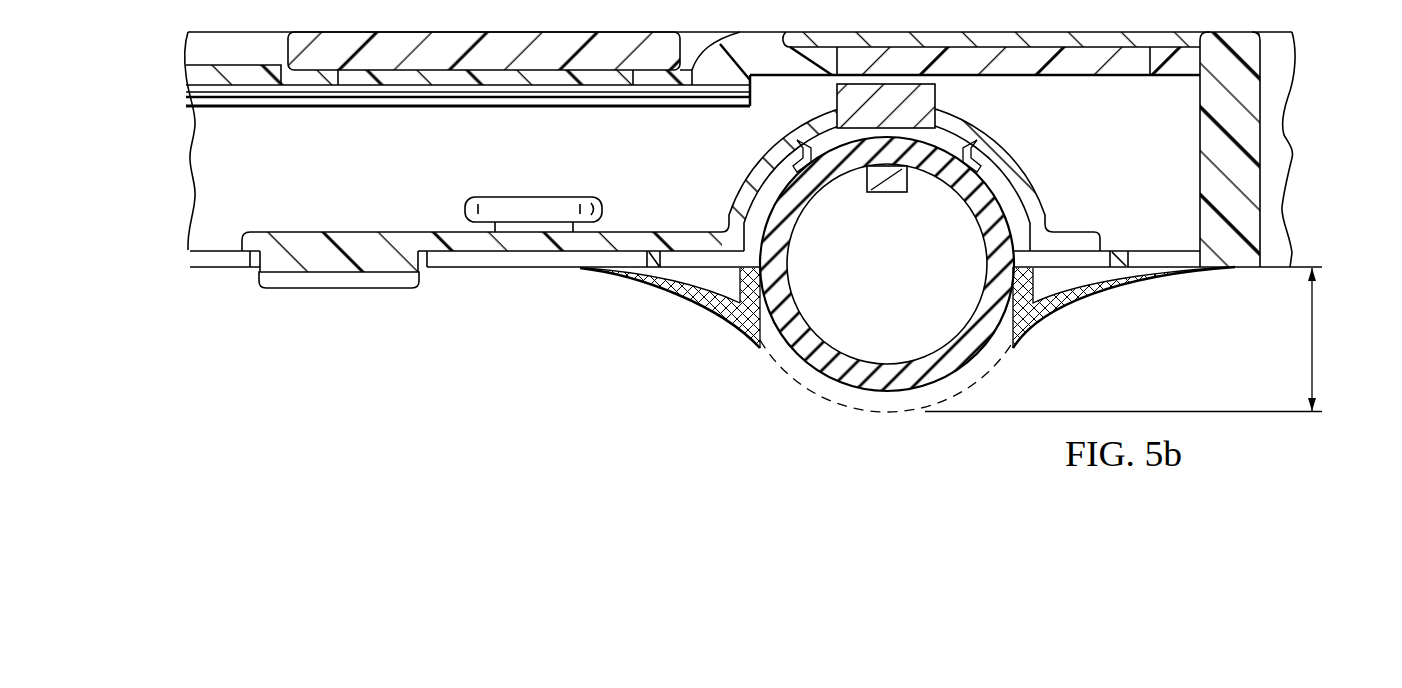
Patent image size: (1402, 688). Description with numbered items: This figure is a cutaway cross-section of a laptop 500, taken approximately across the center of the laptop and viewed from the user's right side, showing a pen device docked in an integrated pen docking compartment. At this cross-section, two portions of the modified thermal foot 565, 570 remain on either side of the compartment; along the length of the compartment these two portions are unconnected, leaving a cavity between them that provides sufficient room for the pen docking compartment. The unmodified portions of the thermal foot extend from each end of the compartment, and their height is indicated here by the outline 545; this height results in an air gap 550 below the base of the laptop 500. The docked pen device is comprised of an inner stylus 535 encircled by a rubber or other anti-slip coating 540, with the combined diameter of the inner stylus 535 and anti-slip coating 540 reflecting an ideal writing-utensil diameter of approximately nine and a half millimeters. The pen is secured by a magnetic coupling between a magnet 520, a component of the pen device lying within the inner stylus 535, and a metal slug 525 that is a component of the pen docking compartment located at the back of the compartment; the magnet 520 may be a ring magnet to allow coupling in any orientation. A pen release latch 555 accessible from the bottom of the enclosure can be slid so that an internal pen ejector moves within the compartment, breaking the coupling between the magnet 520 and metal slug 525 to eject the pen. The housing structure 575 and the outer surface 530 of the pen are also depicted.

The laptop 500 is at (483, 406).
The magnet 520 is at (888, 194).
The metal slug 525 is at (932, 96).
The outer surface of tube 530 is at (988, 362).
The inner stylus 535 is at (906, 305).
The anti-slip coating 540 is at (810, 358).
The outline of unmodified portions of the thermal foot 545 is at (887, 414).
The air gap 550 is at (1317, 345).
The pen release latch 555 is at (340, 288).
The portion of the modified thermal foot 565 is at (695, 303).
The portion of the modified thermal foot 570 is at (1080, 300).
The housing 575 is at (1034, 204).